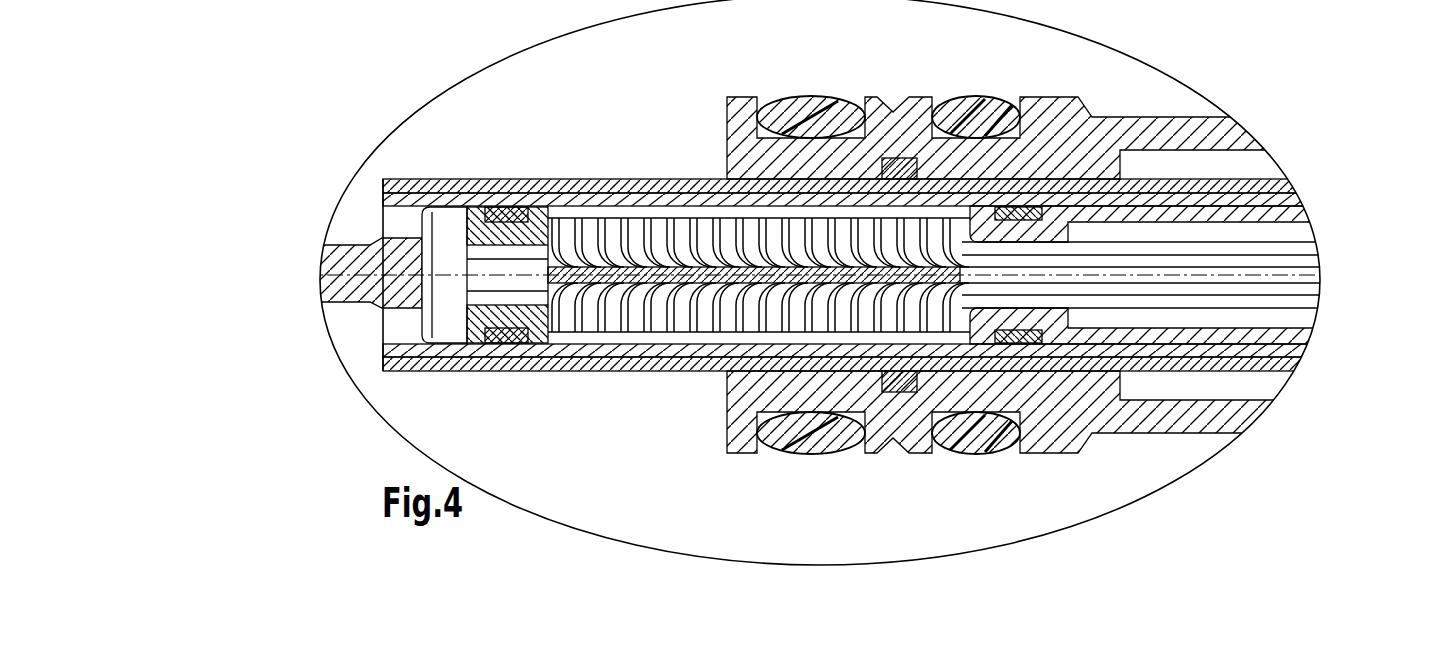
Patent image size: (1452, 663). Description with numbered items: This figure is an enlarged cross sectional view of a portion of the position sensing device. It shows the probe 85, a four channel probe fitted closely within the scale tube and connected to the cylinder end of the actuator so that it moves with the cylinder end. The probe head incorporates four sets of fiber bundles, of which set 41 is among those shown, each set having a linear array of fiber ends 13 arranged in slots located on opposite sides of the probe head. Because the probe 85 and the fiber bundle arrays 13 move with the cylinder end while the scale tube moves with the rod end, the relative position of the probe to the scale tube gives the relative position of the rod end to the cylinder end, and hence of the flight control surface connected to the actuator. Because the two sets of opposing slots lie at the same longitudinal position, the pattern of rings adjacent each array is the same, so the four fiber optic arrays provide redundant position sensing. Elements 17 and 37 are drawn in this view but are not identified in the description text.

The fiber bundle array 13 is at (652, 222).
The housing sleeve 17 is at (905, 344).
The probe 85 is at (482, 230).
The fiber bundle set 41 is at (1300, 255).
The outer sheath 37 is at (1290, 298).